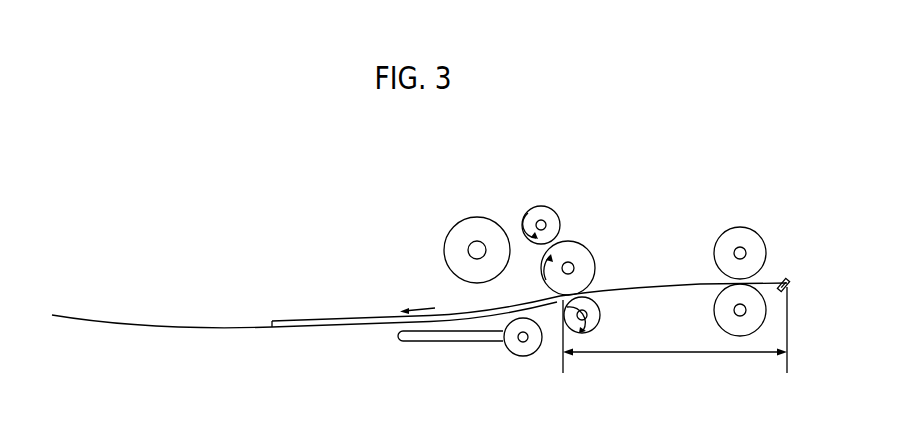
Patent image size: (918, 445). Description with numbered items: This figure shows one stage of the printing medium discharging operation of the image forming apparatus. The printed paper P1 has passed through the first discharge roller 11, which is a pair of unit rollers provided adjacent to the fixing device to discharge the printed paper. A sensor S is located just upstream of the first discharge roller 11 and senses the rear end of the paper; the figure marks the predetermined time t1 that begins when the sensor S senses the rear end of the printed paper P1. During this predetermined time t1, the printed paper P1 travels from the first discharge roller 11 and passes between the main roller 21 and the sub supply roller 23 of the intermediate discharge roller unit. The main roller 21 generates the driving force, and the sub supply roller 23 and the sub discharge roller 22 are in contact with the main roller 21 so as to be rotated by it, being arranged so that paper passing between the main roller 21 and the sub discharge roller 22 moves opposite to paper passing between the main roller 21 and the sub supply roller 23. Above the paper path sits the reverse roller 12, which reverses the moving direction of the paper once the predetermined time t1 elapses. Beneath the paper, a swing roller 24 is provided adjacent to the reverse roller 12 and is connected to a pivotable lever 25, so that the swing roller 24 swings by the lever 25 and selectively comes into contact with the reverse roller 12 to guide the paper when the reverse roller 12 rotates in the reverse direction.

The first discharge roller 11 is at (740, 233).
The reverse roller 12 is at (477, 220).
The main roller 21 is at (586, 258).
The sub discharge roller 22 is at (548, 215).
The sub supply roller 23 is at (600, 313).
The swing roller 24 is at (520, 350).
The lever 25 is at (408, 341).
The printed paper P1 is at (322, 320).
The sensor S is at (788, 277).
The predetermined time t1 is at (675, 331).